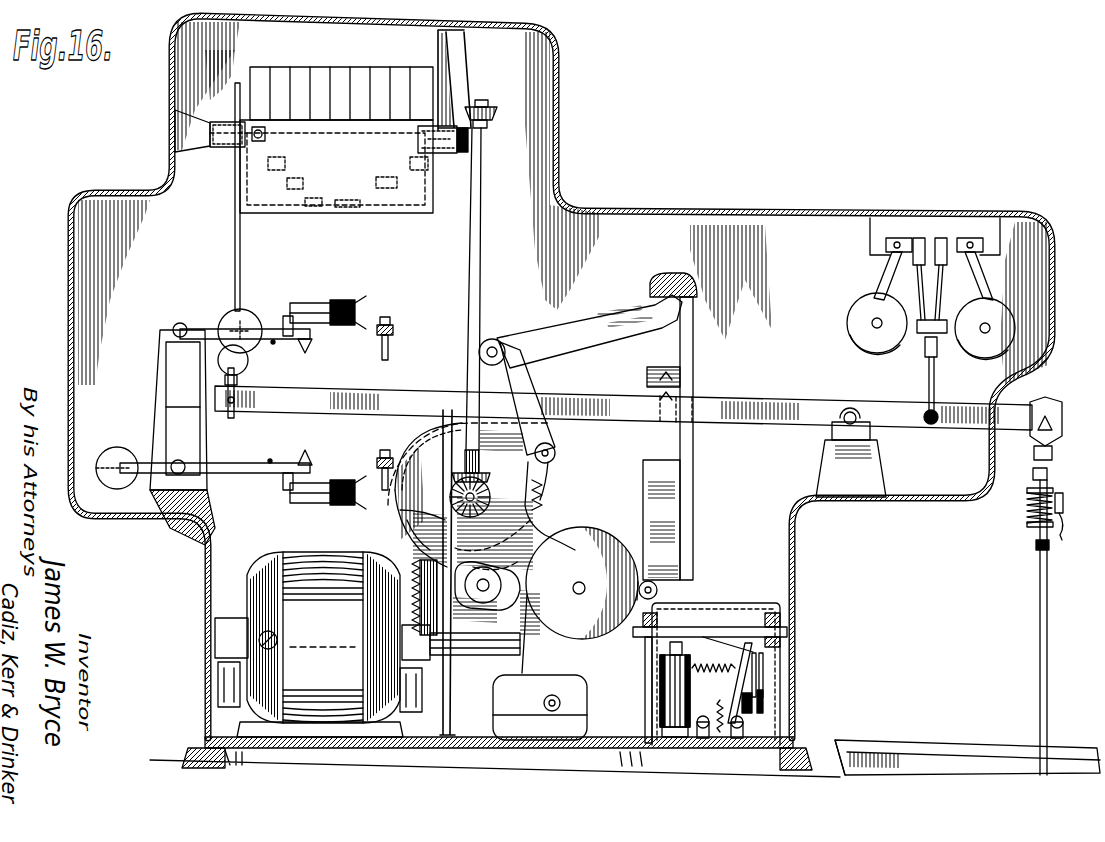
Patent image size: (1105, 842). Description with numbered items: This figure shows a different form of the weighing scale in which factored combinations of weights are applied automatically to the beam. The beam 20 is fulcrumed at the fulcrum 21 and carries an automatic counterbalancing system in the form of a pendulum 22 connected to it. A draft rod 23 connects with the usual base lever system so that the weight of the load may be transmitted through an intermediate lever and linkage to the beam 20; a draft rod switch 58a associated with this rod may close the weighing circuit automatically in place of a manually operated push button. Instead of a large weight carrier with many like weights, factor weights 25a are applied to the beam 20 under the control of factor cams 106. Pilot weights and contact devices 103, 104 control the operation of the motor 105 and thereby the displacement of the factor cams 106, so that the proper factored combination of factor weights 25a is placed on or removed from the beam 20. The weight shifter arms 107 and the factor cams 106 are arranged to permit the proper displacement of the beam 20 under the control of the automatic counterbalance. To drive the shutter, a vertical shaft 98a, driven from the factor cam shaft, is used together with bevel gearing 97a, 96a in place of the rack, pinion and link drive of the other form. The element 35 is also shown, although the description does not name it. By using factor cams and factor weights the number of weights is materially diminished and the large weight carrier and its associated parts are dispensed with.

The beam 20 is at (795, 410).
The fulcrum 21 is at (853, 418).
The pendulum 22 is at (866, 312).
The draft rod 23 is at (1040, 478).
The factor weights 25a is at (688, 463).
The box 35 is at (433, 187).
The draft rod switch 58a is at (1062, 520).
The bevel gear 96a is at (466, 150).
The bevel gear 97a is at (486, 110).
The vertical shaft 98a is at (483, 278).
The pilot weight and contact device 103 is at (273, 323).
The pilot weight and contact device 104 is at (231, 478).
The motor 105 is at (367, 644).
The factor cams 106 is at (428, 440).
The weight shifter arms 107 is at (615, 298).